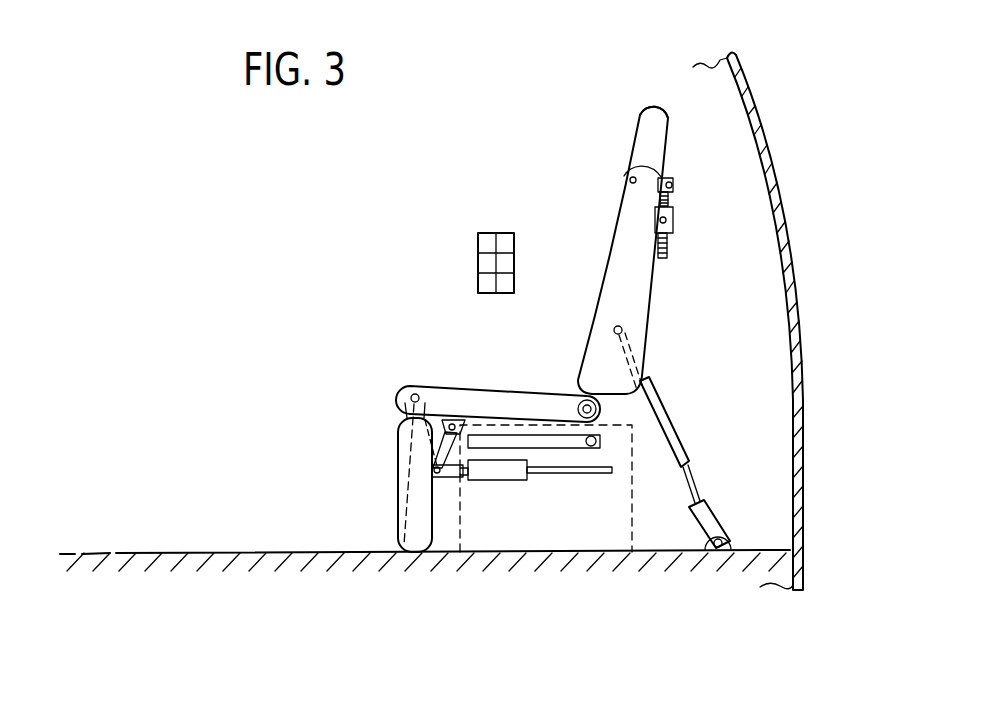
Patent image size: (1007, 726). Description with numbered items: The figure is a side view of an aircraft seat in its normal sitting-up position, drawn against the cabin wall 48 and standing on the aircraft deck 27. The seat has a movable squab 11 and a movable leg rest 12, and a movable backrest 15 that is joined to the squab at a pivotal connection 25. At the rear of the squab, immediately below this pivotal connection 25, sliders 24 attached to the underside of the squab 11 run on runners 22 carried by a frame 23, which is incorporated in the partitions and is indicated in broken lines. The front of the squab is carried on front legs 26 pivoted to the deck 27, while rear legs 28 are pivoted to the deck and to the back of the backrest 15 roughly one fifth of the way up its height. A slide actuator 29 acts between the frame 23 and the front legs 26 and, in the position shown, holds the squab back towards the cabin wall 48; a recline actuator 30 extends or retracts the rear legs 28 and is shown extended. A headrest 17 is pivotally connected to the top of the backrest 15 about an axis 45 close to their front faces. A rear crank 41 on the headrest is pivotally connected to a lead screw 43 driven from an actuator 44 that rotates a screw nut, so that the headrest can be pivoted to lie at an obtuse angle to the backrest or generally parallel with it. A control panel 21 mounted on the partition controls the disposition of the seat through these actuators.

The squab 11 is at (476, 397).
The leg rest 12 is at (412, 483).
The backrest 15 is at (622, 243).
The headrest 17 is at (652, 120).
The control panel 21 is at (478, 245).
The runners 22 is at (545, 438).
The frame 23 is at (632, 517).
The sliders 24 is at (592, 438).
The pivotal connection 25 is at (582, 405).
The front legs 26 is at (433, 447).
The aircraft deck 27 is at (205, 552).
The rear legs 28 is at (672, 426).
The slide actuator 29 is at (500, 473).
The recline actuator 30 is at (697, 483).
The rear crank 41 is at (673, 182).
The lead screw 43 is at (670, 198).
The actuator 44 is at (674, 221).
The axis 45 is at (628, 178).
The cabin wall 48 is at (782, 187).